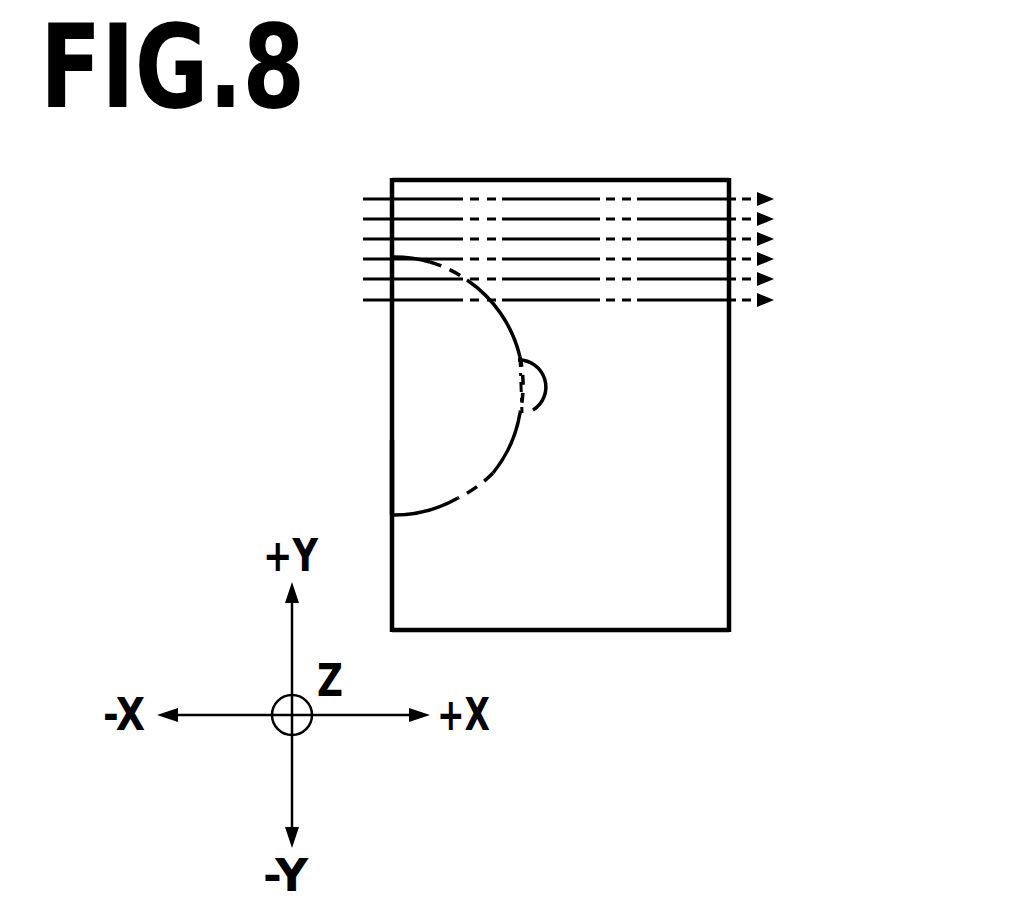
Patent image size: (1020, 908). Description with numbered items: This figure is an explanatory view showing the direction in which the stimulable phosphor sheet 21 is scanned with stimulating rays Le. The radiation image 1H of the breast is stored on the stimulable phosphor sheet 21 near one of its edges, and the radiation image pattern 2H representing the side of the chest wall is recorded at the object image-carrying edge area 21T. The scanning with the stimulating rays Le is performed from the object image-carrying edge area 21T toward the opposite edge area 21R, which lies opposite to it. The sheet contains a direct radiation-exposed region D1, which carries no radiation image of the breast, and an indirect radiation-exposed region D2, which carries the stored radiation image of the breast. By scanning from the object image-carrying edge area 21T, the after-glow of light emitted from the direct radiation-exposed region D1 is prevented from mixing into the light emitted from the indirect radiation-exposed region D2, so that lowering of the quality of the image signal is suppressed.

The stimulable phosphor sheet 21 is at (690, 646).
The object image-carrying edge area 21T is at (390, 403).
The opposite edge area 21R is at (730, 490).
The stimulating rays Le is at (560, 199).
The radiation image 1H is at (483, 428).
The radiation image pattern 2H is at (412, 442).
The direct radiation-exposed region D1 is at (622, 612).
The indirect radiation-exposed region D2 is at (403, 492).